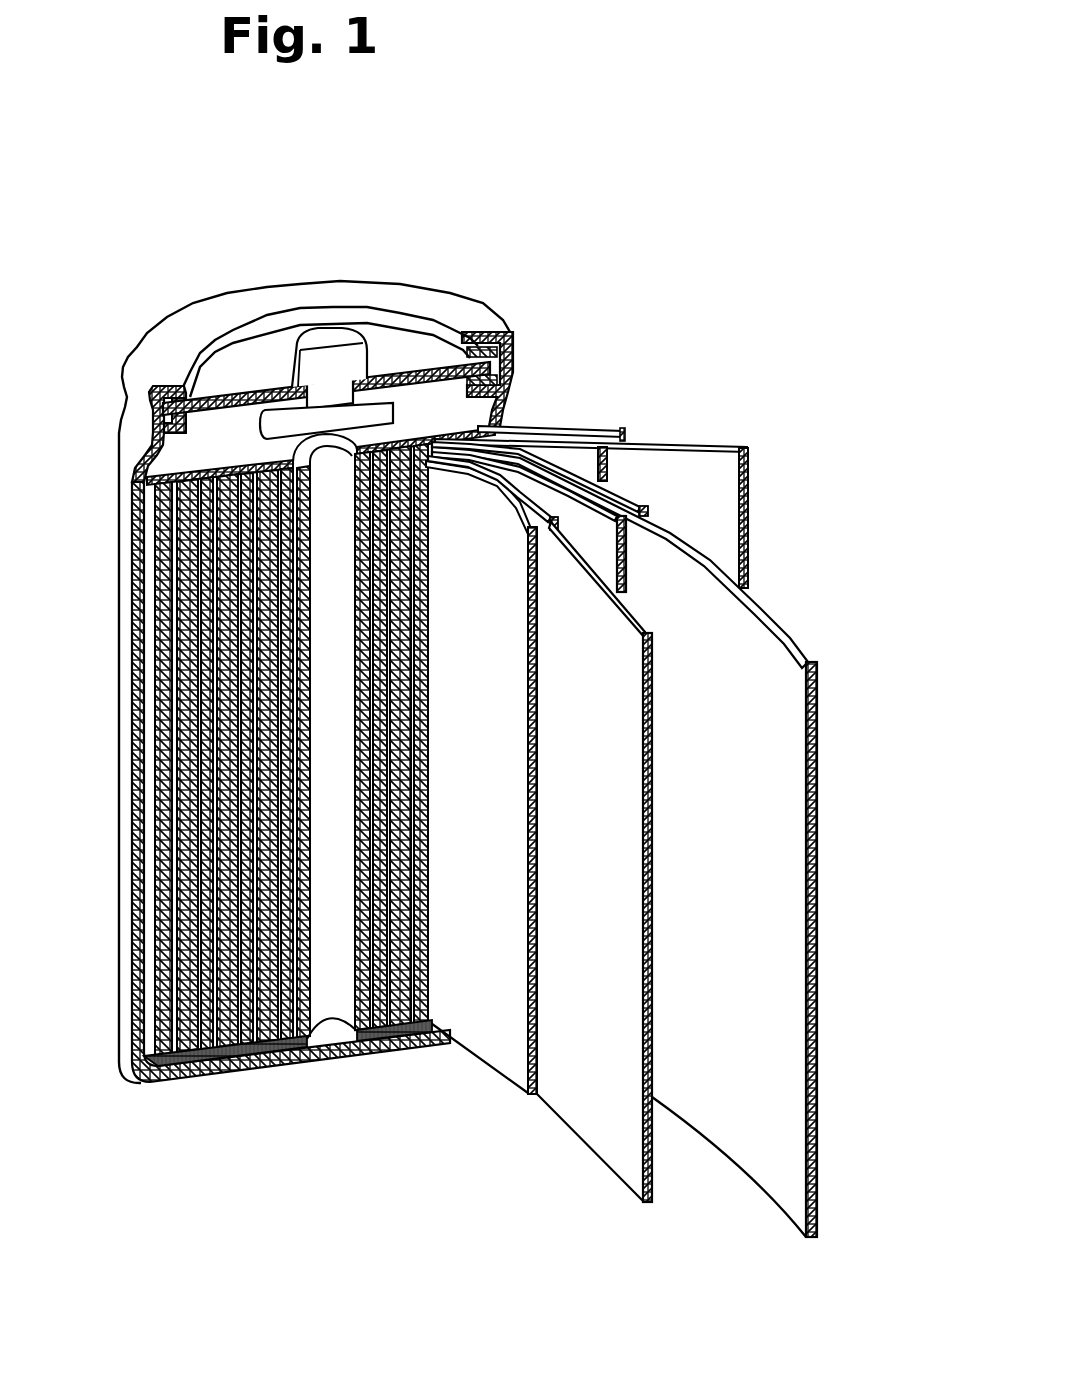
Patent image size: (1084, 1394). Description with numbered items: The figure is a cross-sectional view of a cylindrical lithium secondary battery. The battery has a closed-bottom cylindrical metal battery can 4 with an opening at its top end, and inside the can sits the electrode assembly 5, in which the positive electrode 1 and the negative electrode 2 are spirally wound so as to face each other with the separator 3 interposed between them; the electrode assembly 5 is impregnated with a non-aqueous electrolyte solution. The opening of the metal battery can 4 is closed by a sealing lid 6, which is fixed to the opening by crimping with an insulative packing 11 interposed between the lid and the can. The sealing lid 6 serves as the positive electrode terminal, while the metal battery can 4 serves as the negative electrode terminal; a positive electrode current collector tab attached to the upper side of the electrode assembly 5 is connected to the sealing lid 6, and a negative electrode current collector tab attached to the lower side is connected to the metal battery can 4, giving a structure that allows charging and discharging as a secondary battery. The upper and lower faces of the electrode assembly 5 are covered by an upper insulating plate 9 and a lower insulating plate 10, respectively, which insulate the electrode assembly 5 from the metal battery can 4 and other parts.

The positive electrode 1 is at (620, 560).
The negative electrode 2 is at (645, 510).
The separator 3 is at (797, 638).
The metal battery can 4 is at (130, 570).
The electrode assembly 5 is at (545, 831).
The sealing lid 6 is at (245, 372).
The upper insulating plate 9 is at (200, 463).
The lower insulating plate 10 is at (208, 1062).
The insulative packing 11 is at (505, 373).